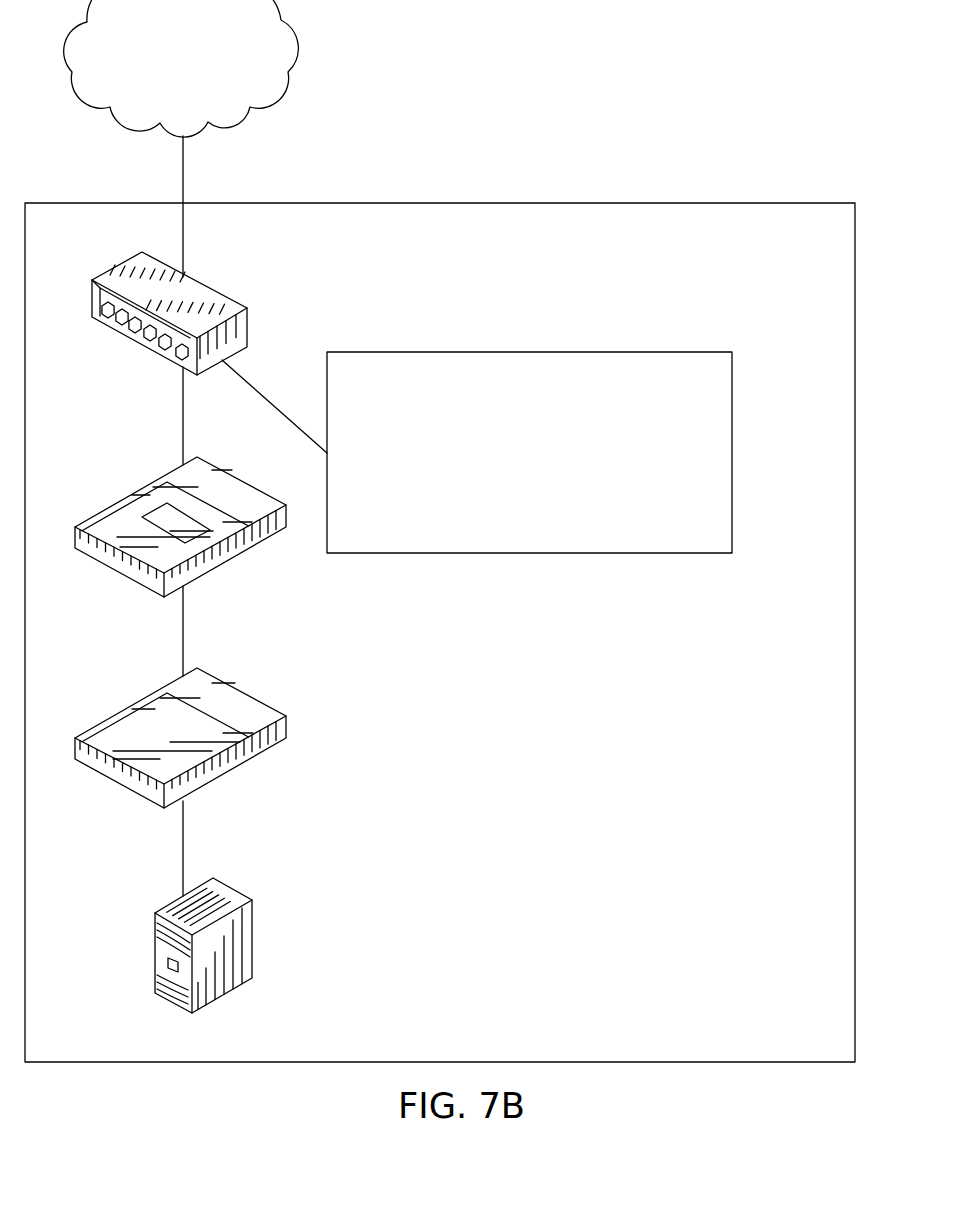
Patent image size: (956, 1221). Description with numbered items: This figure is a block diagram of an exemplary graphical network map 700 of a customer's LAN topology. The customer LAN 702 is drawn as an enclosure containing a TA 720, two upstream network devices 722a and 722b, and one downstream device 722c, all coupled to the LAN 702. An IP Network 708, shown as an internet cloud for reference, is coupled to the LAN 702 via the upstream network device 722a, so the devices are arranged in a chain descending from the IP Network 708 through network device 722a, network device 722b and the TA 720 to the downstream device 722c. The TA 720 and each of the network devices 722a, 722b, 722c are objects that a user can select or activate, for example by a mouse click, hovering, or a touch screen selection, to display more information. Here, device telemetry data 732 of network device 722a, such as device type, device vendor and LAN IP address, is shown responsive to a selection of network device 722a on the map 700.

The graphical network map 700 is at (735, 37).
The customer LAN 702 is at (672, 203).
The IP Network 708 is at (295, 38).
The TA 720 is at (467, 733).
The upstream network device 722a is at (458, 325).
The upstream network device 722b is at (156, 480).
The downstream device 722c is at (467, 942).
The device telemetry data 732 is at (650, 352).